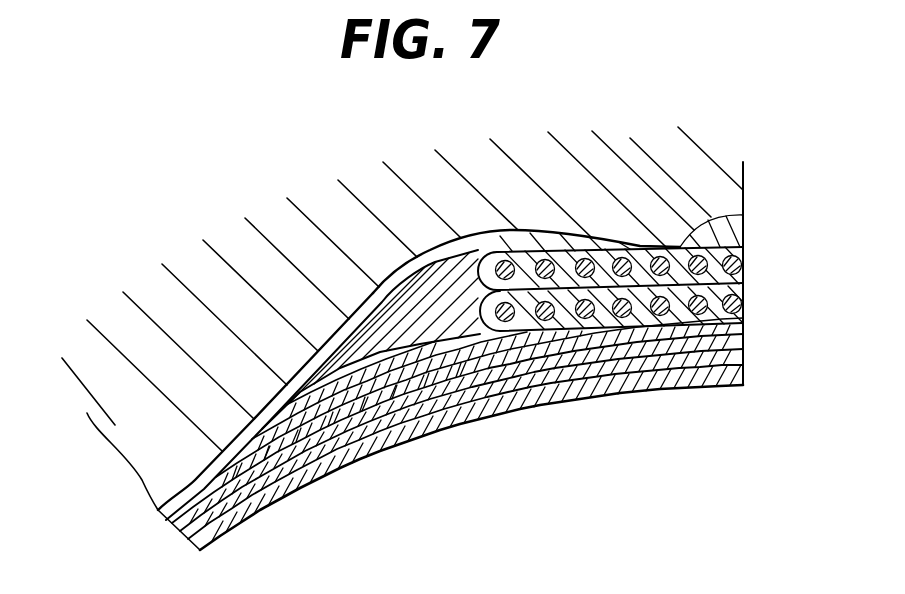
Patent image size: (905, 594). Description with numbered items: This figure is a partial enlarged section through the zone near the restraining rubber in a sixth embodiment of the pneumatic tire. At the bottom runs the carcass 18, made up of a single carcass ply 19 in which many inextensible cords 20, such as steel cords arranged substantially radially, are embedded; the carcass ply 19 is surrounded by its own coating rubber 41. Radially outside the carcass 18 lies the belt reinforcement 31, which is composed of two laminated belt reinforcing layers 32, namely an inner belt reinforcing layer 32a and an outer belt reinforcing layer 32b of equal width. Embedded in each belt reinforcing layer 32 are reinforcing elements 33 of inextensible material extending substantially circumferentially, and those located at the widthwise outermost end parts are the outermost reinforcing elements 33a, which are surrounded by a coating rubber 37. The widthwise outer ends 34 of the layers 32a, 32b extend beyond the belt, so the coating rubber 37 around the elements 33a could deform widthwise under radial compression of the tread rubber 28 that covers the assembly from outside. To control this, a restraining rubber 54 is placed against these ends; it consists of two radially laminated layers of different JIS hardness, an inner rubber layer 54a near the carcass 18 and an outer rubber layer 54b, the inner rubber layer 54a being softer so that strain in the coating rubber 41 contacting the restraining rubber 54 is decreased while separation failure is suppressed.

The carcass 18 is at (257, 513).
The carcass ply 19 is at (303, 476).
The inextensible cords 20 is at (322, 466).
The tread rubber 28 is at (610, 125).
The belt reinforcement 31 is at (743, 215).
The belt reinforcing layer 32 is at (745, 248).
The inner belt reinforcing layer 32a is at (745, 313).
The outer belt reinforcing layer 32b is at (630, 248).
The reinforcing elements 33 is at (652, 348).
The outermost reinforcing elements 33a is at (508, 358).
The widthwise outer ends 34 is at (475, 243).
The coating rubber 37 is at (480, 318).
The coating rubber 41 is at (158, 512).
The restraining rubber 54 is at (372, 294).
The inner rubber layer 54a is at (420, 430).
The outer rubber layer 54b is at (423, 272).